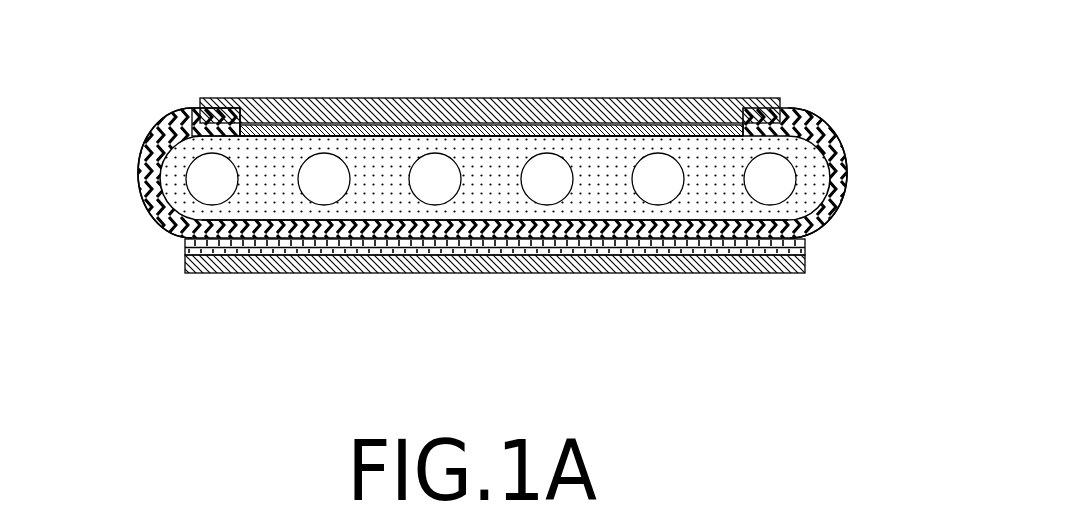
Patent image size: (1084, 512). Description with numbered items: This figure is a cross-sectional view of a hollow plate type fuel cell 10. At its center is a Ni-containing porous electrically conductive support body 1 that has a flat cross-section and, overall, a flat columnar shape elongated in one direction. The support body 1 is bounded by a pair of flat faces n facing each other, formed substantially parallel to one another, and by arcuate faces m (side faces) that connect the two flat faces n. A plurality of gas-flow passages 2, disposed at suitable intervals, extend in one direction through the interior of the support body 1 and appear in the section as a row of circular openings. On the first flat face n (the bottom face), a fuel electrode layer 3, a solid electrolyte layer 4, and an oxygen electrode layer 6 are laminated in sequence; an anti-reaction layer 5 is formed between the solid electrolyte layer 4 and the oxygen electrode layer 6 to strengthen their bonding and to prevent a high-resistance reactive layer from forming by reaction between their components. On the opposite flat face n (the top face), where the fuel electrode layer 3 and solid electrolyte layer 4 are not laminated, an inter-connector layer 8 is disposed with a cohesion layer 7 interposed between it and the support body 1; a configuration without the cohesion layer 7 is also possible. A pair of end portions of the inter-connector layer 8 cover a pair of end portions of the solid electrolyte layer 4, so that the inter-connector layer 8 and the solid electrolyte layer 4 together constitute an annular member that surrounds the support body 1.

The fuel cell 10 is at (500, 211).
The electrically conductive support body 1 is at (372, 198).
The gas-flow passages 2 is at (423, 178).
The fuel electrode layer 3 is at (823, 232).
The solid electrolyte layer 4 is at (173, 127).
The anti-reaction layer 5 is at (608, 245).
The oxygen electrode layer 6 is at (658, 267).
The cohesion layer 7 is at (705, 135).
The inter-connector layer 8 is at (450, 112).
The flat faces n is at (600, 137).
The arcuate faces m is at (141, 181).